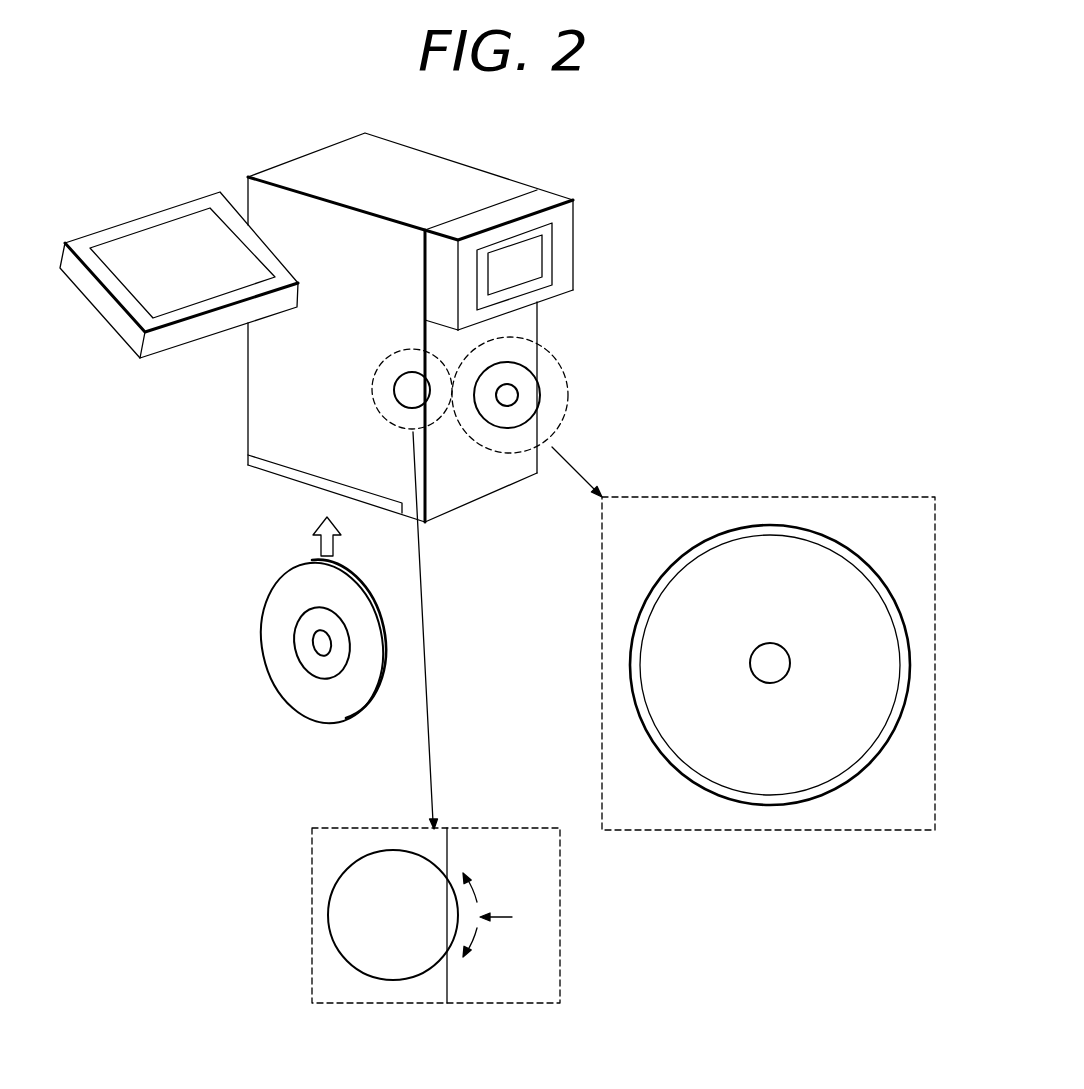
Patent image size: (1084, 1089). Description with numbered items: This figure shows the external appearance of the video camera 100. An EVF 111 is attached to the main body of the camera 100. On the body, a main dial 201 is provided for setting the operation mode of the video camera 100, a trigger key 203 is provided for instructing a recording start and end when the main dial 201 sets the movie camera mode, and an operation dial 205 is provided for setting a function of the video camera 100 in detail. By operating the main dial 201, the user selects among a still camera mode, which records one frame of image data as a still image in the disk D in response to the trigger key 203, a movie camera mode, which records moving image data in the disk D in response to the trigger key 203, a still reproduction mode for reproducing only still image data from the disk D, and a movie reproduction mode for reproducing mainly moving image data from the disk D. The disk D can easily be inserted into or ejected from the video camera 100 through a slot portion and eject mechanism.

The video camera 100 is at (248, 417).
The EVF 111 is at (158, 242).
The main dial 201 is at (530, 378).
The trigger key 203 is at (512, 397).
The operation dial 205 is at (403, 377).
The disk D is at (268, 657).